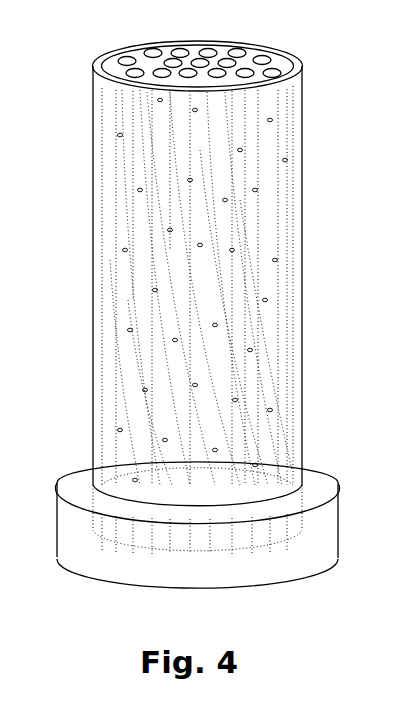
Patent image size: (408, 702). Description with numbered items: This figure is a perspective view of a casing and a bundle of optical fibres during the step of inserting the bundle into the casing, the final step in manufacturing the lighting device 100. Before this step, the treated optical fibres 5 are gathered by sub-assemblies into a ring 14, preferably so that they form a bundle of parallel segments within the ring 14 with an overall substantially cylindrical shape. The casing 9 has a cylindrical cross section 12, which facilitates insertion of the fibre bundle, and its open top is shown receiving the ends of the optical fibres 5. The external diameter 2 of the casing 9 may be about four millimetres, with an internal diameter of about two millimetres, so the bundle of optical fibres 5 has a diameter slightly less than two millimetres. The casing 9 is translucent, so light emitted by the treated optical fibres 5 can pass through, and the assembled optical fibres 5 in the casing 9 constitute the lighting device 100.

The lighting device 100 is at (93, 237).
The external diameter 2 is at (302, 296).
The optical fibres 5 is at (258, 243).
The casing 9 is at (100, 291).
The cylindrical cross section 12 is at (117, 169).
The ring 14 is at (338, 538).